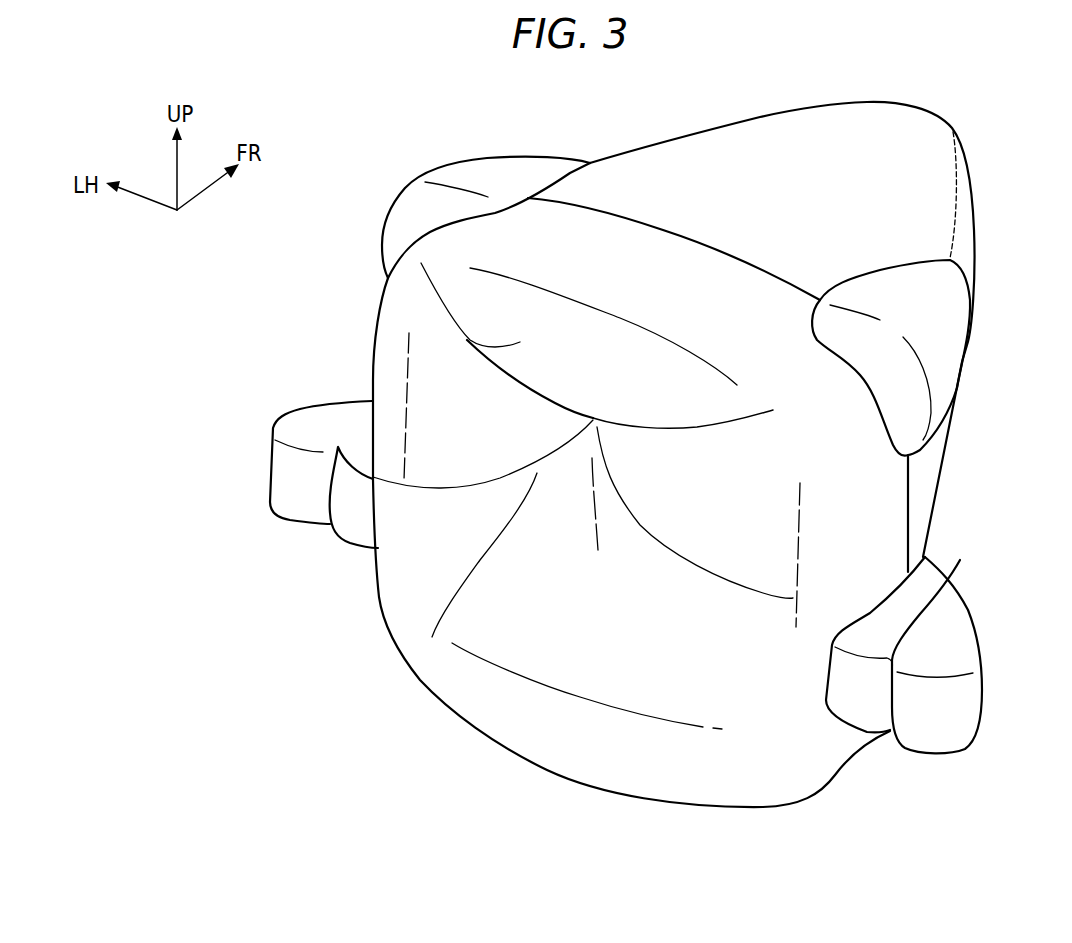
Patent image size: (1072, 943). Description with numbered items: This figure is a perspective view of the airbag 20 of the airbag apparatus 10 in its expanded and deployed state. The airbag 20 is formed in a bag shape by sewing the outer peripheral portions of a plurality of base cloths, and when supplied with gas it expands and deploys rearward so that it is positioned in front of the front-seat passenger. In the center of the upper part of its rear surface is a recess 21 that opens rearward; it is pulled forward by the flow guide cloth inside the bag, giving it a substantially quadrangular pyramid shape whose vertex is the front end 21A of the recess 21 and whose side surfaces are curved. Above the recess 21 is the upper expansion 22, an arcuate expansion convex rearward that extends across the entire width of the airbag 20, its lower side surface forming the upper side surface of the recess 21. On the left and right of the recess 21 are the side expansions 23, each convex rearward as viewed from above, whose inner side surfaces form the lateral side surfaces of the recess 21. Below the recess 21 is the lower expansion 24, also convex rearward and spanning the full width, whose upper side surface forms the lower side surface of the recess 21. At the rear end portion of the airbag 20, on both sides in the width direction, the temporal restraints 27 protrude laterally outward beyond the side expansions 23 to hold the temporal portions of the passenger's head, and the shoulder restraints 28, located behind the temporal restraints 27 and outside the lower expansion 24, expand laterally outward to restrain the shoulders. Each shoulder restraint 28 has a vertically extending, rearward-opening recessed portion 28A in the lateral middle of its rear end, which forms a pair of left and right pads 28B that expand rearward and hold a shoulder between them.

The airbag apparatus 10 is at (1029, 149).
The airbag 20 is at (647, 143).
The recess 21 is at (447, 638).
The front end of the recess 21A is at (597, 519).
The upper expansion 22 is at (470, 342).
The side expansion 23 is at (440, 402).
The lower expansion 24 is at (542, 717).
The temporal restraint 27 is at (432, 172).
The shoulder restraint 28 is at (272, 466).
The recessed portion 28A is at (323, 478).
The pad 28B is at (287, 491).